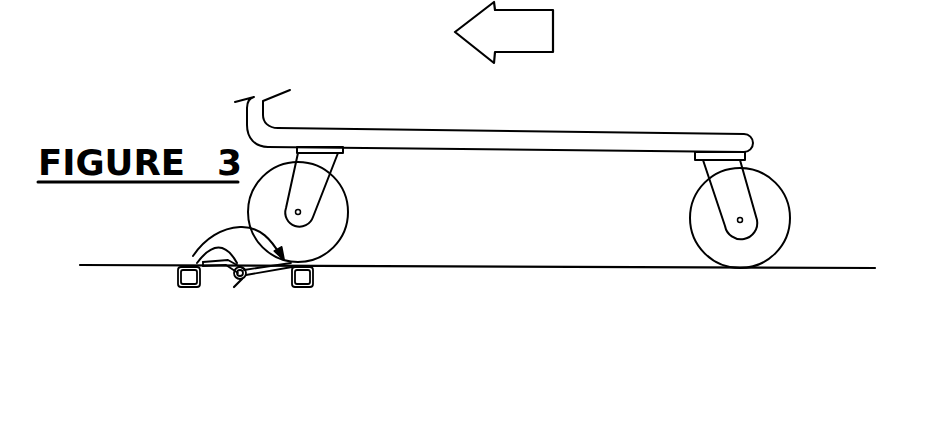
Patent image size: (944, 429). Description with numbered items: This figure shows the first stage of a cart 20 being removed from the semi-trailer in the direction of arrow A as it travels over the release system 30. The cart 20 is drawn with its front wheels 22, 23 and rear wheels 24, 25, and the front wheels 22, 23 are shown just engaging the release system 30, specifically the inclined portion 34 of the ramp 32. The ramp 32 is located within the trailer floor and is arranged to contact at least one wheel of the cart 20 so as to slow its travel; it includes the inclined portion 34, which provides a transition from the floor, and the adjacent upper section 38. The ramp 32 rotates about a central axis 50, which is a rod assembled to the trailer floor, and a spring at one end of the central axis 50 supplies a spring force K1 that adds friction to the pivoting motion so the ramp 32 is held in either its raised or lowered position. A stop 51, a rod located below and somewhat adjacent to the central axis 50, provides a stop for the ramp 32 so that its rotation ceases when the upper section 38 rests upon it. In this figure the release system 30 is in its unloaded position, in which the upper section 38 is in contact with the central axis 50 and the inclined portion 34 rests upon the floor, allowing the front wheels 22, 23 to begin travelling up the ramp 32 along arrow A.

The cart 20 is at (516, 133).
The front wheel 22 is at (331, 209).
The front wheel 23 is at (314, 187).
The rear wheel 24 is at (705, 215).
The rear wheel 25 is at (726, 195).
The release system 30 is at (212, 300).
The ramp 32 is at (222, 303).
The inclined portion 34 is at (302, 261).
The upper section 38 is at (195, 262).
The central axis 50 is at (242, 285).
The stop 51 is at (228, 284).
The spring force K1 is at (230, 231).
The removal path / direction arrow A is at (515, 32).